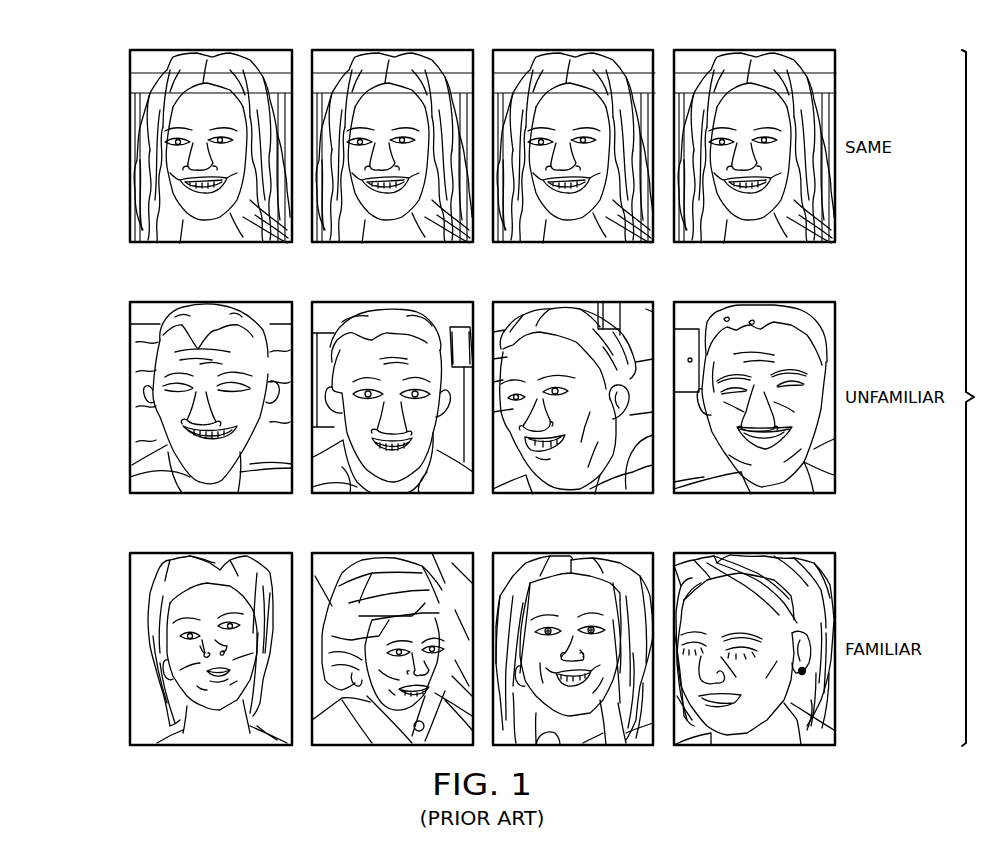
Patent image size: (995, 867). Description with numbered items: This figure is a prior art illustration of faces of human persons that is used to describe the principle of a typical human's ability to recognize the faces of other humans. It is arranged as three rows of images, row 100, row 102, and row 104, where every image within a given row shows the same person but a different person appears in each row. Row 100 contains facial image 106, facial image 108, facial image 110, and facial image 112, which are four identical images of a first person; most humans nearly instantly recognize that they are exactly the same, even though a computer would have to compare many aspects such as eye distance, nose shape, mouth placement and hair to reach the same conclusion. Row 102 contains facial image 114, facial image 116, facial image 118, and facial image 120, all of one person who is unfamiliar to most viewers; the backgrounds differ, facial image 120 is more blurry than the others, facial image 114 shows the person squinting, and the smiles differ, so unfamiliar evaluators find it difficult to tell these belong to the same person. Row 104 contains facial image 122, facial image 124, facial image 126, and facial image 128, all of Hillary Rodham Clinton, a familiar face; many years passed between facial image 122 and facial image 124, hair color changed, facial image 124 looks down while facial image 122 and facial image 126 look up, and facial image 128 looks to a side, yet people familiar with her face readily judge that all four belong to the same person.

The row 100 is at (116, 51).
The row 102 is at (116, 303).
The row 104 is at (116, 554).
The facial image 106 is at (192, 242).
The facial image 108 is at (373, 242).
The facial image 110 is at (554, 242).
The facial image 112 is at (734, 242).
The facial image 114 is at (229, 302).
The facial image 116 is at (409, 302).
The facial image 118 is at (590, 302).
The facial image 120 is at (774, 302).
The facial image 122 is at (212, 553).
The facial image 124 is at (392, 553).
The facial image 126 is at (595, 553).
The facial image 128 is at (775, 553).